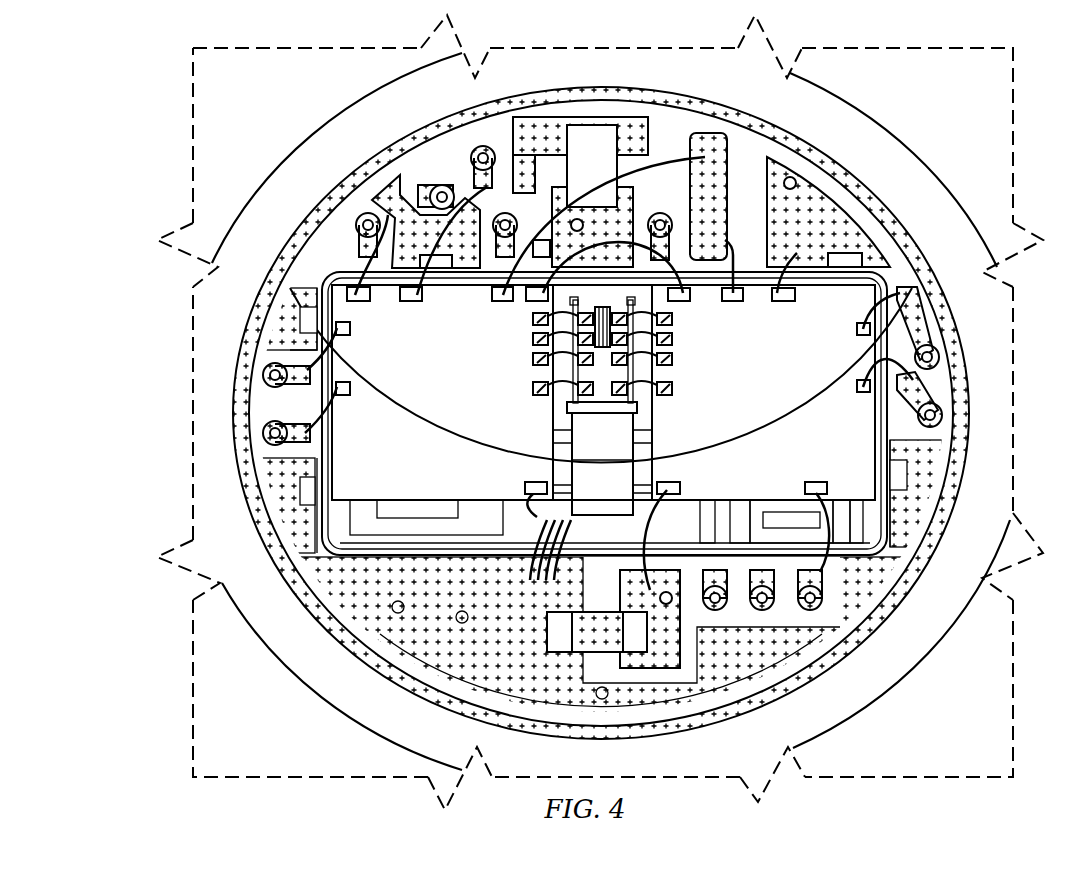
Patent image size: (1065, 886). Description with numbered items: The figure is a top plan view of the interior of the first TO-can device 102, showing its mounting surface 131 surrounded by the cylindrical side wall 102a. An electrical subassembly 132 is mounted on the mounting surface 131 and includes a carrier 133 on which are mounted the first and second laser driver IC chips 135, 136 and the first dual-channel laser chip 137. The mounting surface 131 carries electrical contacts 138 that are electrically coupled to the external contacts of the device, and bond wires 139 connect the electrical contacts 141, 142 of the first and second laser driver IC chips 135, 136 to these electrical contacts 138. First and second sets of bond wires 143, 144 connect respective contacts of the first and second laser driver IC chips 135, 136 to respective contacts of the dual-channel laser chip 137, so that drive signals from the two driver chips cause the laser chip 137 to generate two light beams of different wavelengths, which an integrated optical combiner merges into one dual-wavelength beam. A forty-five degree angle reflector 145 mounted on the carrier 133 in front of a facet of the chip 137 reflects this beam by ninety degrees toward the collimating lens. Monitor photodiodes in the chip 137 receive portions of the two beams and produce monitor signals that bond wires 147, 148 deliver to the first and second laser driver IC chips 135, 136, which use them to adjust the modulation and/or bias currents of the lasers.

The first TO-can device 102 is at (184, 31).
The cylindrical side wall 102a is at (342, 142).
The mounting surface 131 is at (462, 135).
The electrical subassembly (ESA) 132 is at (327, 543).
The carrier 133 is at (527, 528).
The first laser driver IC chip 135 is at (442, 392).
The second laser driver IC chip 136 is at (763, 392).
The first dual-channel laser chip 137 is at (603, 405).
The electrical contacts 138 is at (595, 115).
The bond wires 139 is at (667, 165).
The electrical contacts 141 is at (423, 294).
The electrical contacts 142 is at (796, 294).
The first set of bond wires 143 is at (548, 340).
The second set of bond wires 144 is at (656, 340).
The 45° angle reflector 145 is at (560, 438).
The bond wires 147 is at (548, 408).
The bond wires 148 is at (655, 408).